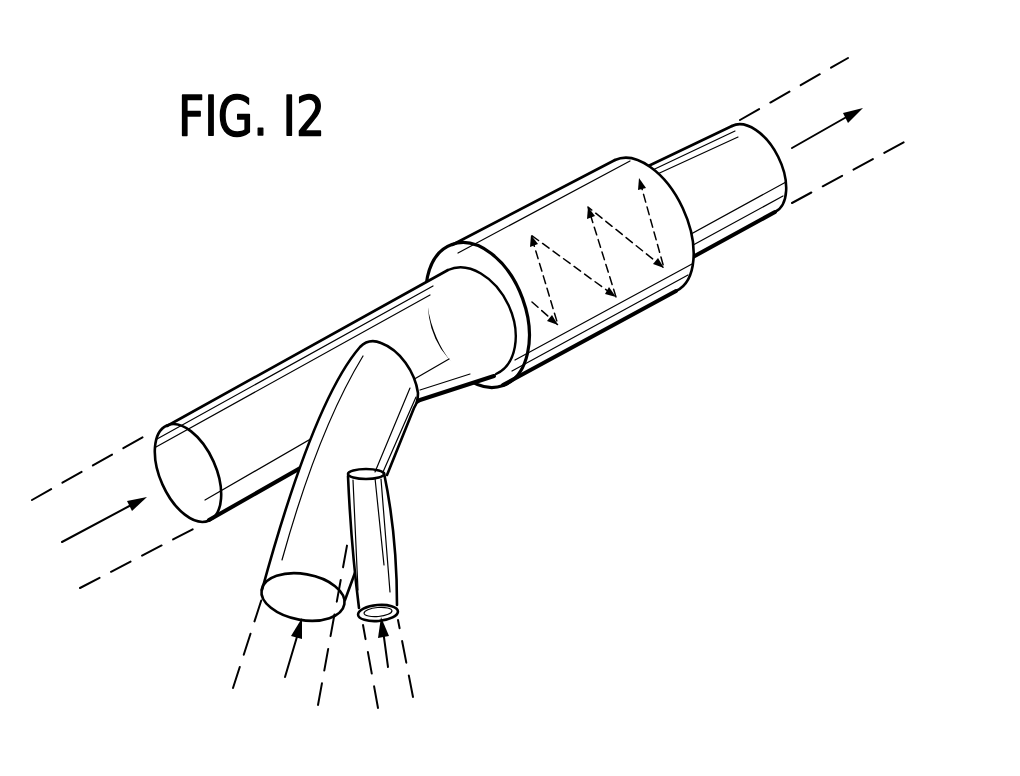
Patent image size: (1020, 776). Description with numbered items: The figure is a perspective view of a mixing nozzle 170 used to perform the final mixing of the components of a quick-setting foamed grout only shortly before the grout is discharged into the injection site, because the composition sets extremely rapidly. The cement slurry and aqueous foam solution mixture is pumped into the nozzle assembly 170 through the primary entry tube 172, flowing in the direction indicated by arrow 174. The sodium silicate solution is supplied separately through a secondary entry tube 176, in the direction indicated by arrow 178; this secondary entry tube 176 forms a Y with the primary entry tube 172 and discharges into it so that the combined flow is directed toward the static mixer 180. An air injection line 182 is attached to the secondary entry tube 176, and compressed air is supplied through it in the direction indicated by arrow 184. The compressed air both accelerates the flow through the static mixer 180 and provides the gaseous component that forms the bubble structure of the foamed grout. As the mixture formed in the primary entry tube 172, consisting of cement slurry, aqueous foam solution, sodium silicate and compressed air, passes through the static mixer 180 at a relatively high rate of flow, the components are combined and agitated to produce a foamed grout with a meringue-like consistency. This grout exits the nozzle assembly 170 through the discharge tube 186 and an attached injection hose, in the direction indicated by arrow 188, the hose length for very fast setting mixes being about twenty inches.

The mixing nozzle 170 is at (414, 235).
The primary entry tube 172 is at (233, 416).
The arrow 174 is at (92, 528).
The secondary entry tube 176 is at (280, 548).
The arrow 178 is at (286, 663).
The static mixer 180 is at (545, 212).
The air injection line 182 is at (382, 586).
The arrow 184 is at (388, 658).
The discharge tube 186 is at (688, 170).
The arrow 188 is at (795, 146).